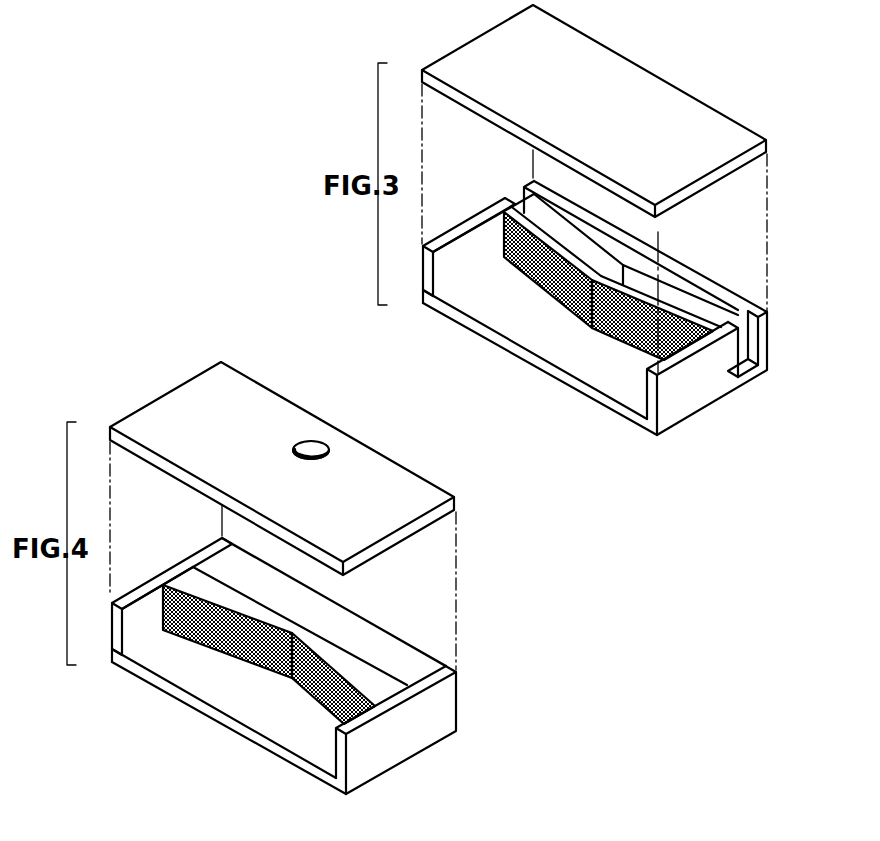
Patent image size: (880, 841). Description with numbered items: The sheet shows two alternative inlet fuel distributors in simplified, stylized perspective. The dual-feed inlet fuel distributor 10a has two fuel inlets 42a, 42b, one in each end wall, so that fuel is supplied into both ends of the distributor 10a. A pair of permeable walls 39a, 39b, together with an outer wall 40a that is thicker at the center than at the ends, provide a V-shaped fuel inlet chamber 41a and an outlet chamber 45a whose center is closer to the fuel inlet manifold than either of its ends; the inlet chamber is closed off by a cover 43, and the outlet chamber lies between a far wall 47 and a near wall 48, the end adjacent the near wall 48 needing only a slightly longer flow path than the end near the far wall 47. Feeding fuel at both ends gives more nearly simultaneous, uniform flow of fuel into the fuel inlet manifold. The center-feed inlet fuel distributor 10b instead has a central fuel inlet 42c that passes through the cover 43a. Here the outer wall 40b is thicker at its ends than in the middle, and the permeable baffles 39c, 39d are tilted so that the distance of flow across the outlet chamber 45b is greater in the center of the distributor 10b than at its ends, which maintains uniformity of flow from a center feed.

In FIG. 3, the inlet fuel distributor 10a is at (473, 350).
In FIG. 4, the inlet fuel distributor 10b is at (158, 715).
In FIG. 3, the permeable wall 39a is at (640, 325).
In FIG. 3, the permeable wall 39b is at (543, 267).
In FIG. 4, the permeable baffle 39c is at (312, 683).
In FIG. 4, the permeable baffle 39d is at (217, 627).
In FIG. 3, the outer wall 40a is at (663, 268).
In FIG. 4, the outer wall 40b is at (360, 630).
In FIG. 3, the fuel inlet chamber 41a is at (677, 294).
In FIG. 3, the fuel inlet 42a is at (753, 349).
In FIG. 3, the fuel inlet 42b is at (527, 196).
In FIG. 4, the central fuel inlet 42c is at (311, 452).
In FIG. 3, the cover 43 is at (617, 80).
In FIG. 4, the cover 43a is at (243, 395).
In FIG. 3, the outlet chamber 45a is at (553, 340).
In FIG. 4, the outlet chamber 45b is at (223, 700).
In FIG. 3, the far wall 47 is at (452, 273).
In FIG. 3, the near wall 48 is at (685, 393).